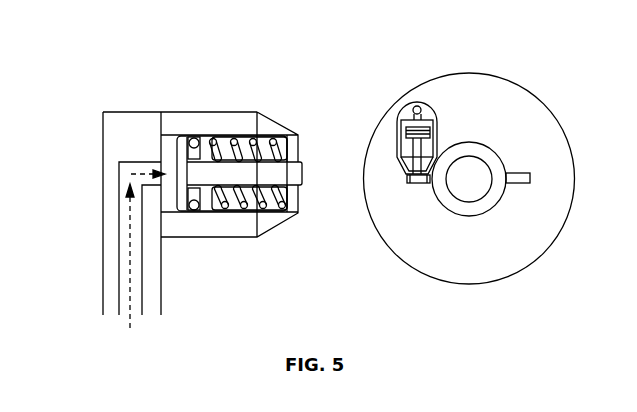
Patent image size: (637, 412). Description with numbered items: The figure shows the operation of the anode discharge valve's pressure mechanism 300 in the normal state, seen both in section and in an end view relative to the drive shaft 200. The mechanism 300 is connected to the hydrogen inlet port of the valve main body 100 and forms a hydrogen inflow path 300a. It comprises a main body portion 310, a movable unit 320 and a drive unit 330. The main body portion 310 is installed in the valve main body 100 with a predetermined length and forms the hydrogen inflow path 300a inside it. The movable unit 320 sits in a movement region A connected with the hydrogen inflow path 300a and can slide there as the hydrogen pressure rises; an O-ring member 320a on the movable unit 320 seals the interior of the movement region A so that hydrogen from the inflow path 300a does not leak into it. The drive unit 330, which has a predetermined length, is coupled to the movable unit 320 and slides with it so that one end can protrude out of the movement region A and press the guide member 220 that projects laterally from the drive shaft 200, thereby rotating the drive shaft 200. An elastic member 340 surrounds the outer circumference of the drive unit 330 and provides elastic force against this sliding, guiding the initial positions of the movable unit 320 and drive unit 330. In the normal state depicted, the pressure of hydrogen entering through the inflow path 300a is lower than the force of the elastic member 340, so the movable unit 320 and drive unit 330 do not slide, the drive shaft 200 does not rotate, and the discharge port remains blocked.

The valve main body 100 is at (543, 252).
The drive shaft 200 is at (477, 167).
The guide member 220 is at (410, 178).
The mechanism 300 is at (285, 102).
The hydrogen inflow path 300a is at (122, 253).
The main body portion 310 is at (130, 118).
The movable unit 320 is at (203, 137).
The O-ring member 320a is at (194, 209).
The drive unit 330 is at (300, 173).
The elastic member 340 is at (266, 209).
The movement region A is at (173, 152).